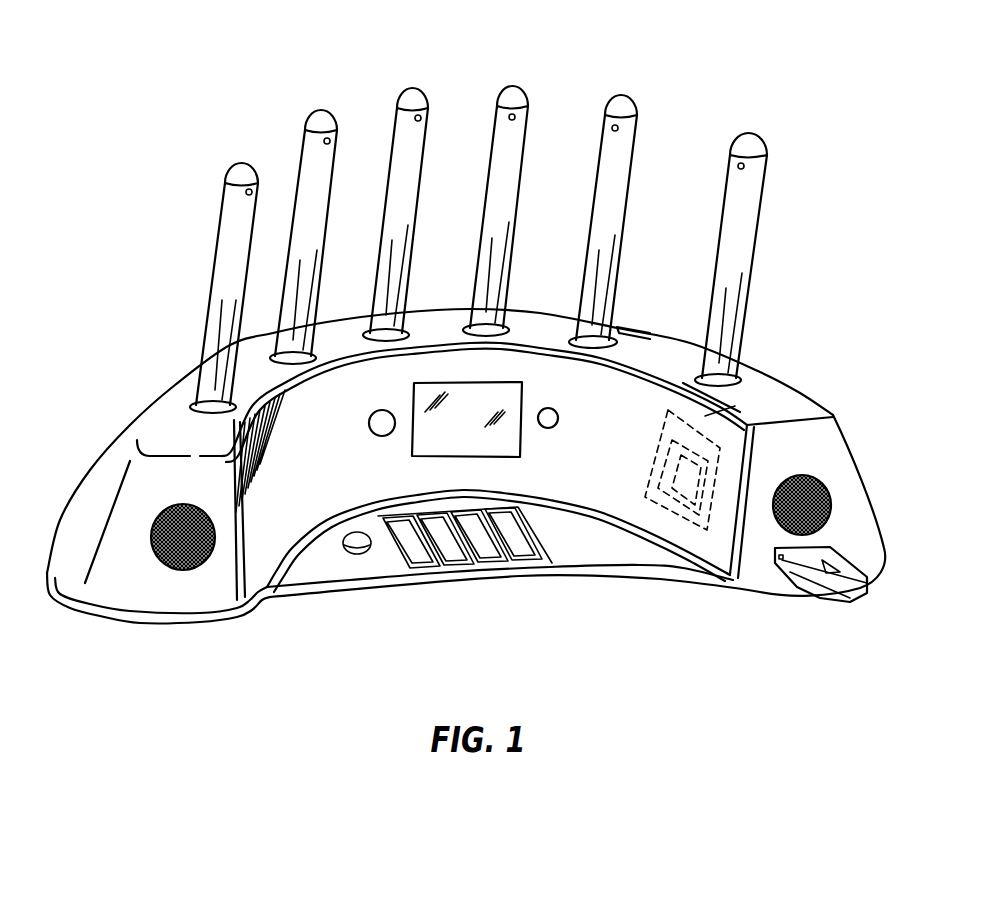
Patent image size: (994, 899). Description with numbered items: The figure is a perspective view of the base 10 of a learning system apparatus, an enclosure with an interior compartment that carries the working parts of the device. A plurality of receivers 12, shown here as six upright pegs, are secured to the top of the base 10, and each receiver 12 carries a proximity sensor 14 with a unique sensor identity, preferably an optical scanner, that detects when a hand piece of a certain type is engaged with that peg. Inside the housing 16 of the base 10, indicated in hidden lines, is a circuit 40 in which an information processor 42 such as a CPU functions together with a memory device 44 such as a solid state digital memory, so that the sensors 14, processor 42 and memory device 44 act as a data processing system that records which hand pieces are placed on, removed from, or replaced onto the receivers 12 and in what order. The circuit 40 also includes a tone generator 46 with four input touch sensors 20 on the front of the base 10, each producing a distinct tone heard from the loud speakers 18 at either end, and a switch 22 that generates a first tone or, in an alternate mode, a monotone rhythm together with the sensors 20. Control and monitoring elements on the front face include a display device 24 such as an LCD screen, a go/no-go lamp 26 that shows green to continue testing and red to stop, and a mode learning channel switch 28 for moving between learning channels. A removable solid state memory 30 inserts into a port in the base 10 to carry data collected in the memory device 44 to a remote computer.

The base 10 is at (472, 357).
The receivers 12 is at (236, 163).
The proximity sensor 14 is at (246, 194).
The housing 16 is at (852, 441).
The loud speakers 18 is at (152, 537).
The input touch sensors 20 is at (413, 570).
The switch 22 is at (348, 556).
The display device 24 is at (418, 448).
The go/no-go lamp 26 is at (557, 424).
The mode learning channel switch 28 is at (370, 431).
The removable solid state memory 30 is at (868, 598).
The circuit 40 is at (668, 410).
The information processor 42 is at (690, 530).
The memory device 44 is at (660, 487).
The tone generator 46 is at (748, 400).